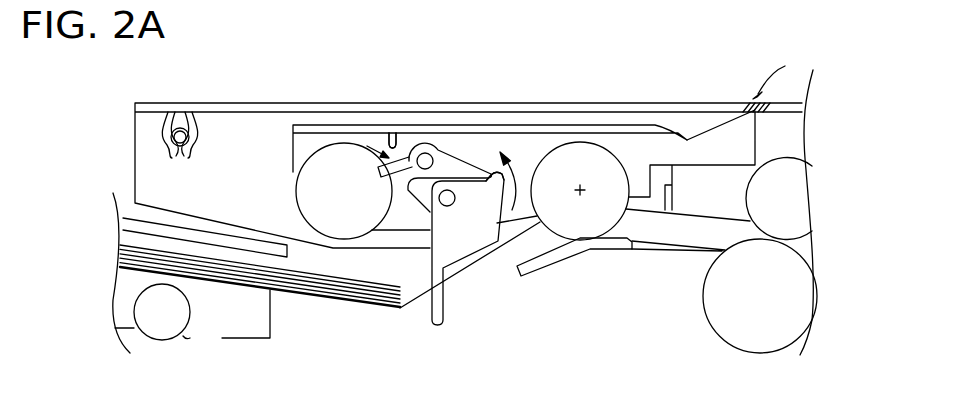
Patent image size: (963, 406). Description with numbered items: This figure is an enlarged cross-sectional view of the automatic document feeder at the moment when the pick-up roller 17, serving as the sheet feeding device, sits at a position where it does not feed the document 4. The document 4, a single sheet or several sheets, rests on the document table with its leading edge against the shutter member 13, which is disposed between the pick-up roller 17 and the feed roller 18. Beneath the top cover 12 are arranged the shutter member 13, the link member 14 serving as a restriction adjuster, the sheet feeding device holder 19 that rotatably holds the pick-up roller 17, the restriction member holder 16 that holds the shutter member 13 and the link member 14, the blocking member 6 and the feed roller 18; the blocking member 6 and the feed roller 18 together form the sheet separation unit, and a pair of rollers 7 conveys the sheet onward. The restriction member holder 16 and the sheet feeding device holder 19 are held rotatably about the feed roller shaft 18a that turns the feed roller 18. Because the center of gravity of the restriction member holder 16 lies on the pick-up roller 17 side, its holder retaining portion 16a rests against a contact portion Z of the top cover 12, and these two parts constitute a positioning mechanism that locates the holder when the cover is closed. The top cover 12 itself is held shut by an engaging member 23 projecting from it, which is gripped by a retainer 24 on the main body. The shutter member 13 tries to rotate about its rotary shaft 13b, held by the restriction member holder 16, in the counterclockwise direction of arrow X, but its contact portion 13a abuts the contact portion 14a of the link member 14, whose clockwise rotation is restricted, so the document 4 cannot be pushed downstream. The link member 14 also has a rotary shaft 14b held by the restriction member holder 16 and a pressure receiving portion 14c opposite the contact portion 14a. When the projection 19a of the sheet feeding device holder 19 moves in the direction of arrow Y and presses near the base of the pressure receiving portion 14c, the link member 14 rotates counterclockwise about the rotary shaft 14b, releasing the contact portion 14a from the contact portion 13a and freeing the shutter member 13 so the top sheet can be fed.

The document 4 is at (358, 292).
The blocking member 6 is at (641, 250).
The pair of rollers 7 is at (795, 190).
The top cover 12 is at (663, 101).
The shutter member 13 is at (452, 247).
The contact portion 13a is at (507, 172).
The rotary shaft 13b is at (449, 204).
The link member 14 is at (424, 152).
The contact portion 14a is at (492, 168).
The rotary shaft 14b is at (395, 135).
The pressure receiving portion 14c is at (381, 178).
The restriction member holder 16 is at (635, 152).
The holder retaining portion 16a is at (742, 120).
The pick-up roller 17 is at (301, 187).
The feed roller 18 is at (580, 142).
The feed roller shaft 18a is at (580, 195).
The sheet feeding device holder 19 is at (305, 127).
The projection 19a is at (390, 128).
The engaging member 23 is at (162, 133).
The retainer 24 is at (182, 112).
The arrow X is at (522, 181).
The arrow Y is at (370, 150).
The contact portion Z is at (771, 71).